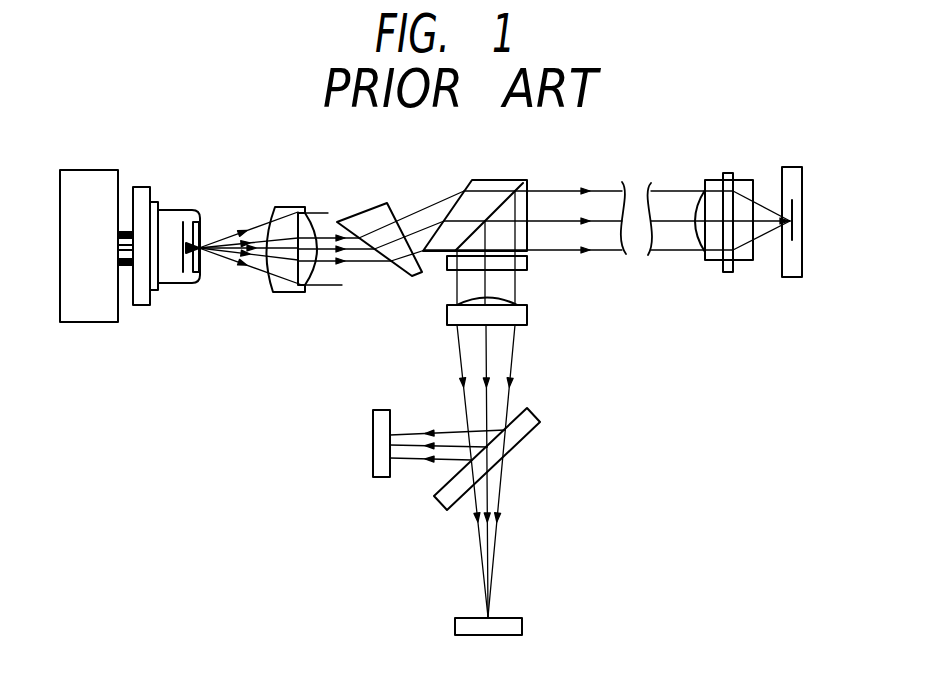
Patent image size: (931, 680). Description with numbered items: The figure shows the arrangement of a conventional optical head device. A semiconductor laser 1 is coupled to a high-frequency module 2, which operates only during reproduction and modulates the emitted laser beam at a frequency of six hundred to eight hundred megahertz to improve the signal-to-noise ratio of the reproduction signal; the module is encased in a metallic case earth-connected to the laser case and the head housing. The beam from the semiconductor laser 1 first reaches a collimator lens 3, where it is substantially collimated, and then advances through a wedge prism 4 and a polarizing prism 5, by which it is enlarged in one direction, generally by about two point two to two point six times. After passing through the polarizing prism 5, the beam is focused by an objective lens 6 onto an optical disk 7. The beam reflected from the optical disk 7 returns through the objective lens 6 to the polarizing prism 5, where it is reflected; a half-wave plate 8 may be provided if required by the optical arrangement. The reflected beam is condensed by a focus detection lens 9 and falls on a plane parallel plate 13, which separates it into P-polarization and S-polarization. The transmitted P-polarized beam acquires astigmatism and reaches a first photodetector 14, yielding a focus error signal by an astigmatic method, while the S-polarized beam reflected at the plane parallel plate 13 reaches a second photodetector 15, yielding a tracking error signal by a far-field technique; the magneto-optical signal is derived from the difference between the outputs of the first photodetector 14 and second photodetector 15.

The semiconductor laser 1 is at (186, 214).
The high-frequency module 2 is at (102, 310).
The collimator lens 3 is at (282, 208).
The wedge prism 4 is at (390, 212).
The polarizing prism 5 is at (507, 183).
The objective lens 6 is at (725, 175).
The optical disk 7 is at (785, 265).
The half-wave plate 8 is at (525, 263).
The focus detection lens 9 is at (523, 320).
The plane parallel plate 13 is at (537, 430).
The first photodetector 14 is at (523, 620).
The second photodetector 15 is at (380, 470).